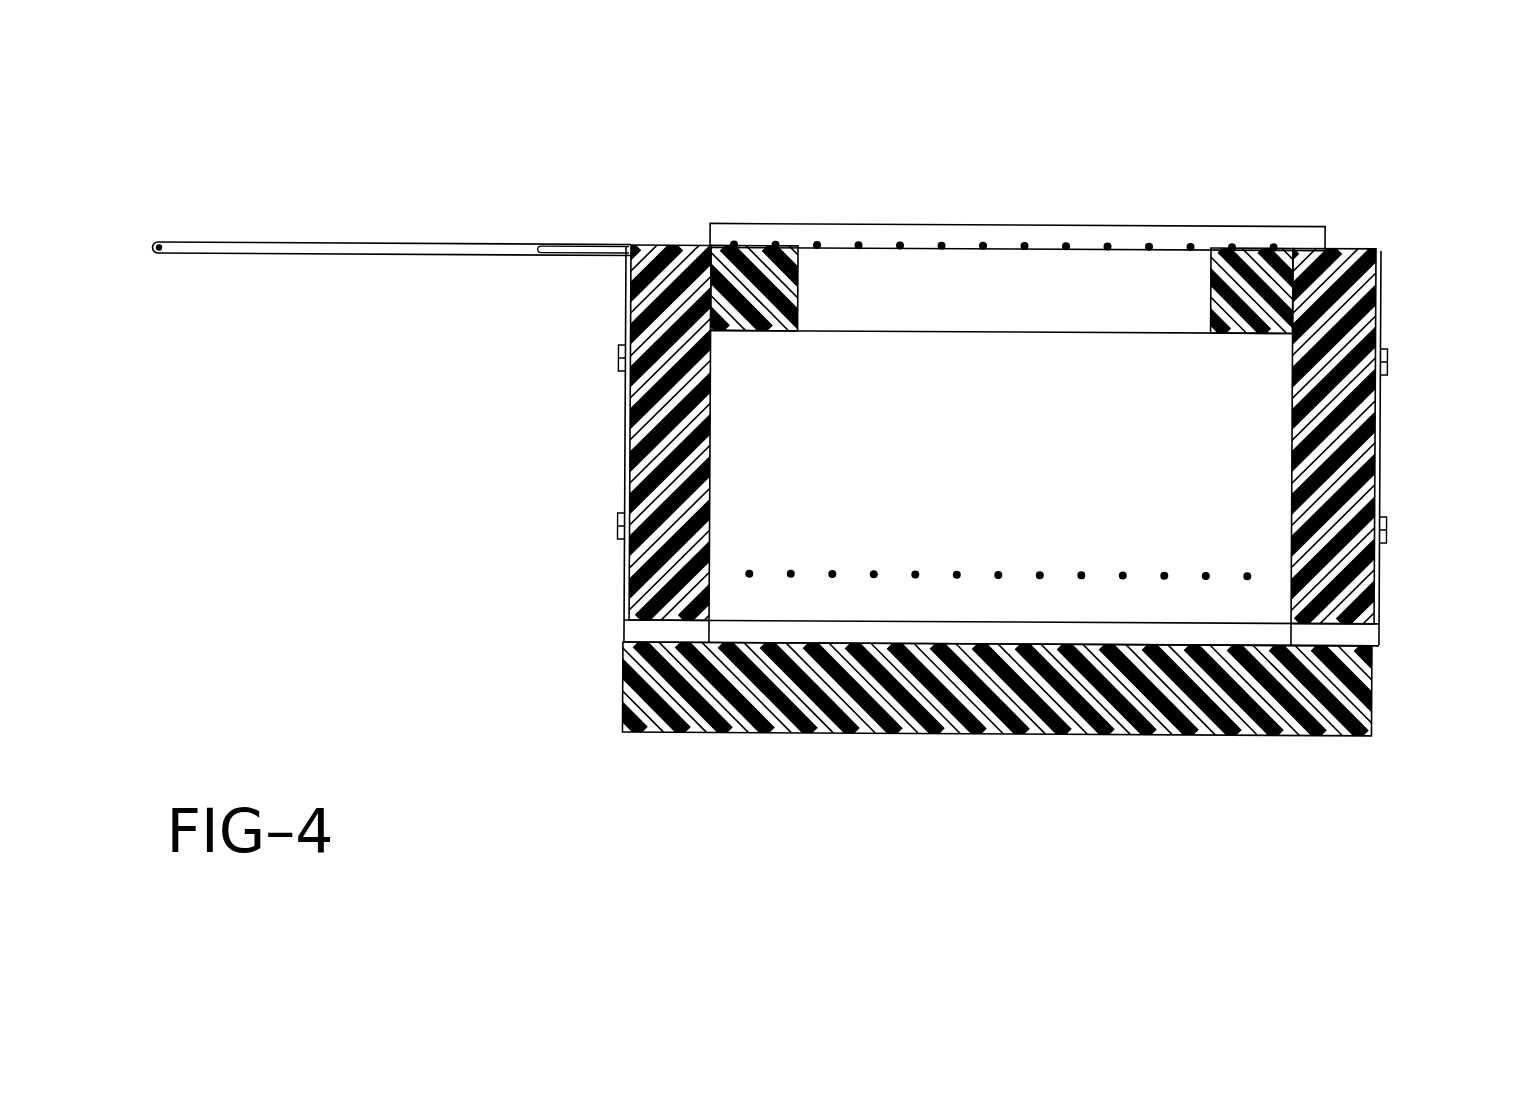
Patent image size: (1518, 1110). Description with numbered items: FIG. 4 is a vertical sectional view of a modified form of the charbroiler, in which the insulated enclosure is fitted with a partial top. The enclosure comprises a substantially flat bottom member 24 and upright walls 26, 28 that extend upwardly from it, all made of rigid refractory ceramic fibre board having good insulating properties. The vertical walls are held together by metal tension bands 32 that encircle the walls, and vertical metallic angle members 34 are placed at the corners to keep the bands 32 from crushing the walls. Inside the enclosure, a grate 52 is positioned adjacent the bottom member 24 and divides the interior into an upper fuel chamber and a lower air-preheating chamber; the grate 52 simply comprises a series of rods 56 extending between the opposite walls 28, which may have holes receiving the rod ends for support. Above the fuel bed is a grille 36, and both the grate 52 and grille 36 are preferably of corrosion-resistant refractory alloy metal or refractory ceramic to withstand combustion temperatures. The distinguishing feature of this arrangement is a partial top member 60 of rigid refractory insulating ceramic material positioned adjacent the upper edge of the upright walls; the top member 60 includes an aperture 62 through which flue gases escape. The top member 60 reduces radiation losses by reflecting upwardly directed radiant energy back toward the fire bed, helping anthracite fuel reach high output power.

The bottom member 24 is at (647, 700).
The side walls 26 is at (1458, 492).
The side walls 28 is at (732, 568).
The tension bands 32 is at (1458, 548).
The angle members 34 is at (1458, 310).
The grille 36 is at (1148, 245).
The grate 52 is at (955, 577).
The rods 56 is at (1163, 577).
The top member 60 is at (1258, 272).
The aperture 62 is at (796, 278).